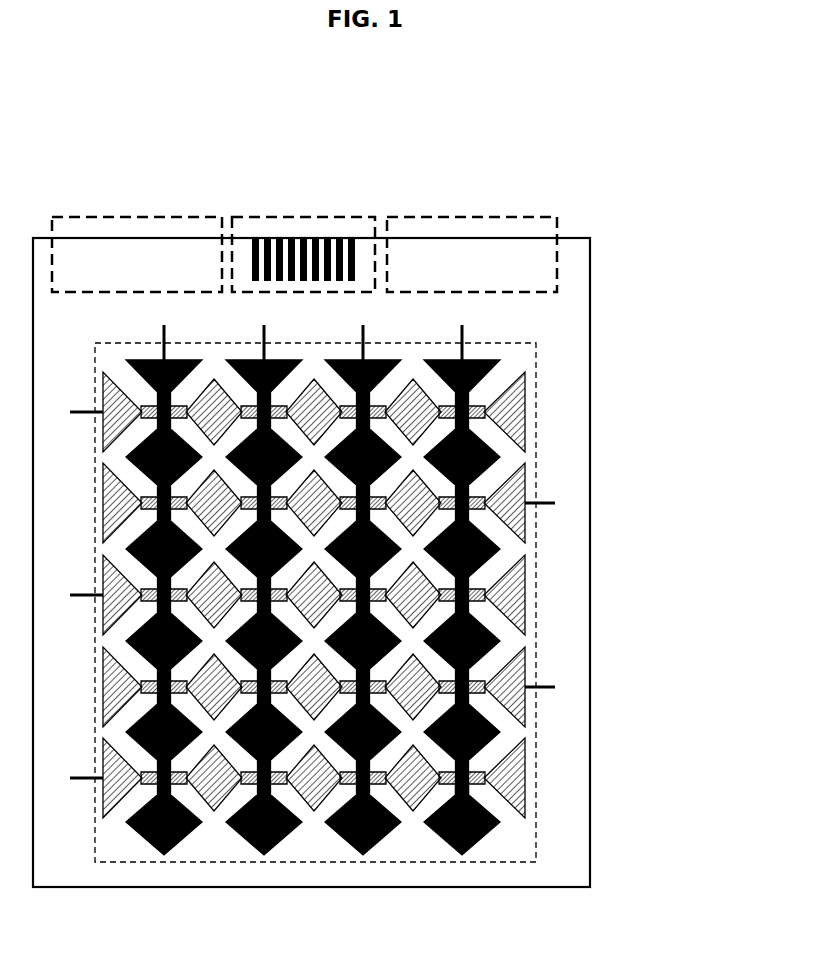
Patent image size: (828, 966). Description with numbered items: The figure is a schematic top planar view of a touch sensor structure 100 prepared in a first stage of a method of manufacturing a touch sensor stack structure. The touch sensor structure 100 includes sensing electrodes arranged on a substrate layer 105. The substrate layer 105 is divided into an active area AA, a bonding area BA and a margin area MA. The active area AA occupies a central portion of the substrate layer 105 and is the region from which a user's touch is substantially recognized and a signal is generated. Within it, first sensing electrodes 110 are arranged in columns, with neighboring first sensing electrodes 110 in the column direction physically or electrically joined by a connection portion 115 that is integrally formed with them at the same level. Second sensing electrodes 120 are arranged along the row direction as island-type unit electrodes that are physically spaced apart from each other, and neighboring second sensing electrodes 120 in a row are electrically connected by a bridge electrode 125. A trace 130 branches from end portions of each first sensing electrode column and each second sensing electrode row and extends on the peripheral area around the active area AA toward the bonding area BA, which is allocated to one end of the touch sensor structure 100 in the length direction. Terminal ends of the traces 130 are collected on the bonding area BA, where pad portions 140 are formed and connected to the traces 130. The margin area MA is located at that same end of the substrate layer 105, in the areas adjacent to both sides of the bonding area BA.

The touch sensor structure 100 is at (624, 184).
The substrate layer 105 is at (578, 862).
The first sensing electrodes 110 is at (155, 845).
The connection portion 115 is at (468, 788).
The second sensing electrodes 120 is at (212, 792).
The bridge electrode 125 is at (283, 790).
The trace 130 is at (464, 340).
The pad portions 140 is at (352, 253).
The margin area MA is at (125, 213).
The bonding area BA is at (315, 213).
The active area AA is at (537, 580).